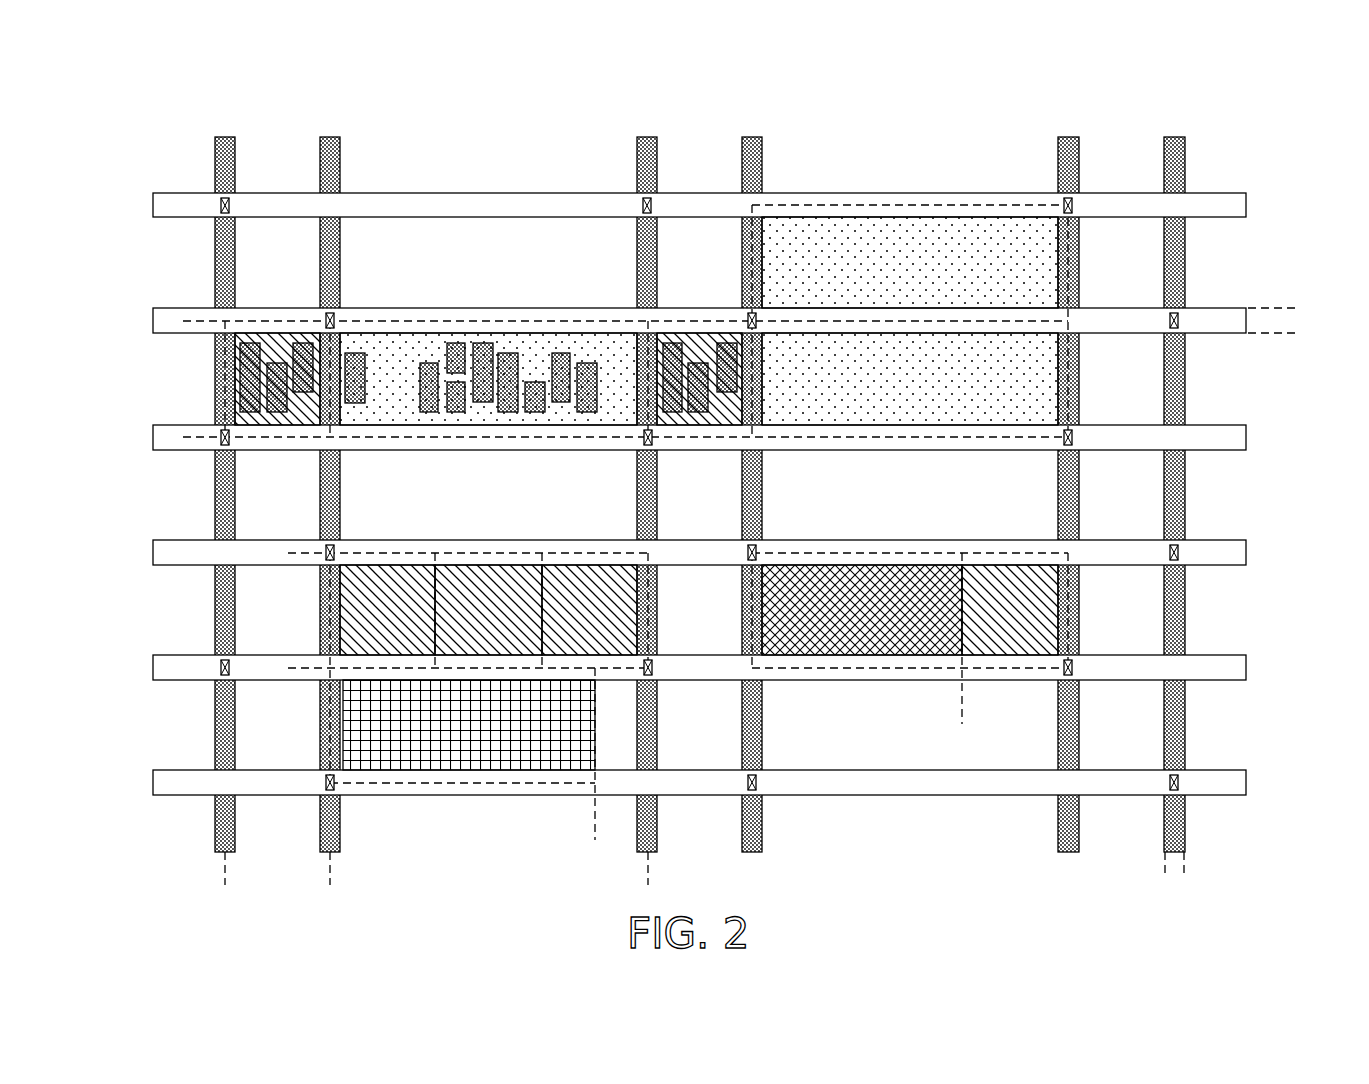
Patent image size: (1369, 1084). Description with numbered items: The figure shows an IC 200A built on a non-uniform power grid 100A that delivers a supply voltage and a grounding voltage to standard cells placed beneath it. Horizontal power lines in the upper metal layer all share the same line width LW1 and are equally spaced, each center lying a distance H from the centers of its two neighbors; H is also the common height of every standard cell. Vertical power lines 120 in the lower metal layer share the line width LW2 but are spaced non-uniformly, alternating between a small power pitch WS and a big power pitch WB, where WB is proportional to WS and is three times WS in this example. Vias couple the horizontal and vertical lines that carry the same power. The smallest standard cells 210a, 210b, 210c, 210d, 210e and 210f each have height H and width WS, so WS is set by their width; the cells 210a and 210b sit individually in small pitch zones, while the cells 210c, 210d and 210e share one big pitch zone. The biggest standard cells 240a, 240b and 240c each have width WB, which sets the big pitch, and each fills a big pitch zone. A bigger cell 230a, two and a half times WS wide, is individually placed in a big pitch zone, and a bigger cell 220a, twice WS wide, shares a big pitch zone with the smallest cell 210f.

The power grid 100A is at (1216, 124).
The IC 200A is at (1355, 914).
The power lines 120 is at (280, 412).
The standard cell 210a is at (274, 333).
The standard cell 210b is at (696, 333).
The standard cell 210c is at (420, 628).
The standard cell 210d is at (522, 628).
The standard cell 210e is at (622, 628).
The standard cell 210f is at (1038, 628).
The standard cell 220a is at (896, 628).
The standard cell 230a is at (502, 741).
The standard cell 240a is at (485, 333).
The standard cell 240b is at (946, 391).
The standard cell 240c is at (946, 278).
The height H is at (190, 321).
The line width LW1 is at (1288, 270).
The line width LW2 is at (1226, 867).
The power pitch WS is at (330, 876).
The power pitch WB is at (1058, 758).